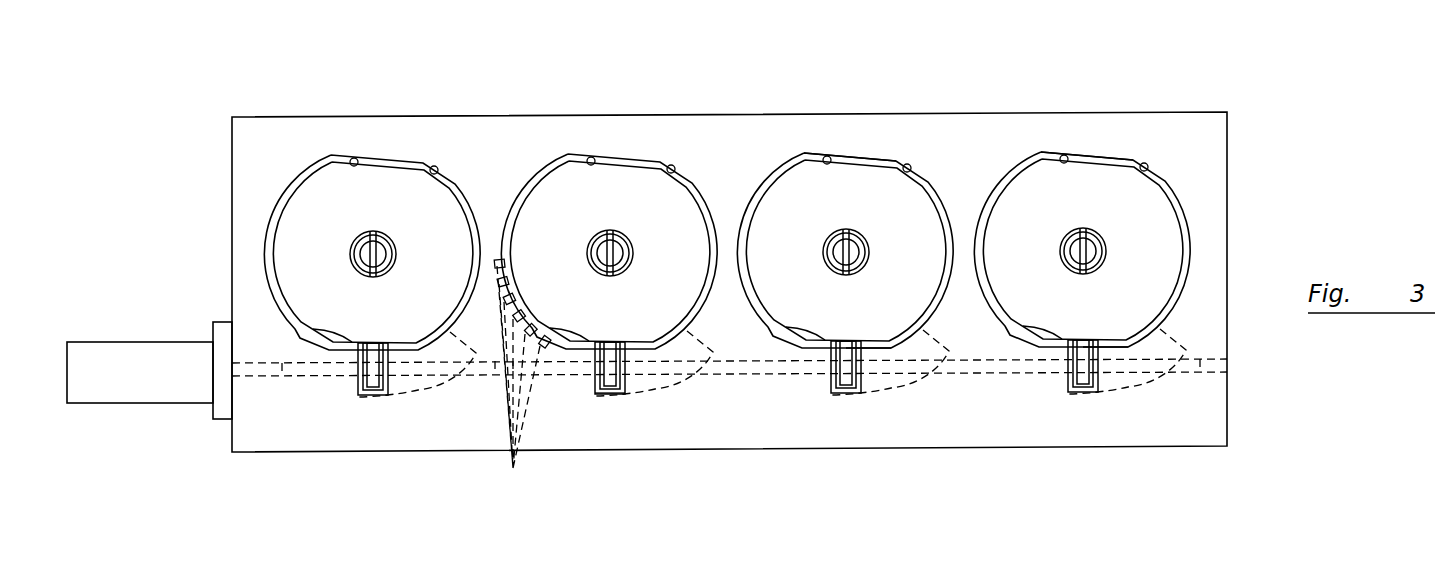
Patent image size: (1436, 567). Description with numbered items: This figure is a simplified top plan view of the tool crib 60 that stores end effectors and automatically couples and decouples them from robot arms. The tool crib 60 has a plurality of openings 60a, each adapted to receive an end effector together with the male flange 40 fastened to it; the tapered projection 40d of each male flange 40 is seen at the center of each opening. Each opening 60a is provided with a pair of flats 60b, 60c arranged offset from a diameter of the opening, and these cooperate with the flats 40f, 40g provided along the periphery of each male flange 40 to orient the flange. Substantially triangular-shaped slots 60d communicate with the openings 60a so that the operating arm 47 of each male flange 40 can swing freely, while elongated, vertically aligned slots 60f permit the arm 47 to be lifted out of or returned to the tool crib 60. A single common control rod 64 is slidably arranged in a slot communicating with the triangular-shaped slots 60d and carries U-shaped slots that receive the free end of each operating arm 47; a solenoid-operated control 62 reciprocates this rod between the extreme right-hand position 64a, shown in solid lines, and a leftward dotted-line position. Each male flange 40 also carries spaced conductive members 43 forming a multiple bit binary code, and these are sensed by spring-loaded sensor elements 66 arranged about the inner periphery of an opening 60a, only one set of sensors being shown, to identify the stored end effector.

The male flange 40 is at (440, 296).
The tapered projection 40d is at (353, 243).
The flat 40f is at (866, 162).
The flat 40g is at (878, 338).
The conductive members 43 is at (546, 339).
The operating arm 47 is at (378, 397).
The tool crib 60 is at (308, 440).
The openings 60a is at (436, 166).
The flat 60b is at (354, 158).
The flat 60c is at (312, 329).
The triangular-shaped slots 60d is at (418, 390).
The vertically aligned slots 60f is at (597, 381).
The solenoid-operated control 62 is at (177, 340).
The control rod 64 is at (340, 376).
The extreme right-hand position 64a is at (1227, 362).
The spring-loaded sensor elements 66 is at (518, 384).